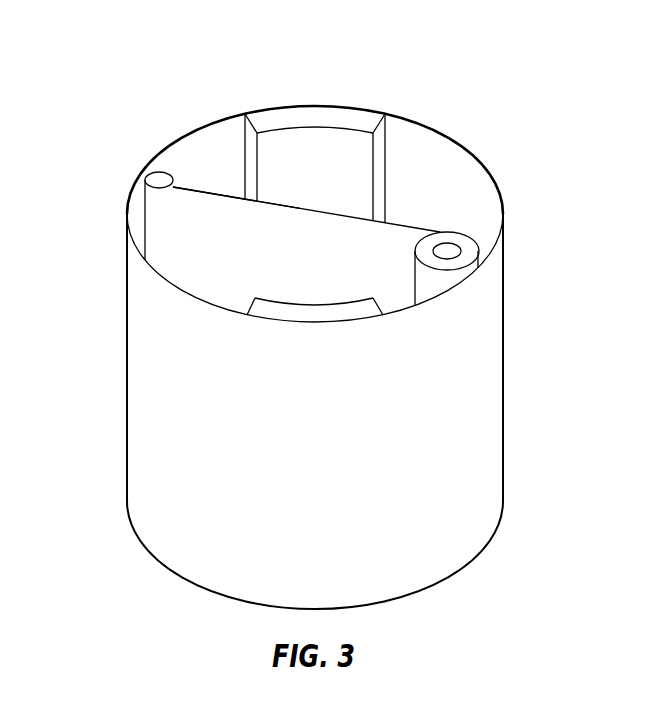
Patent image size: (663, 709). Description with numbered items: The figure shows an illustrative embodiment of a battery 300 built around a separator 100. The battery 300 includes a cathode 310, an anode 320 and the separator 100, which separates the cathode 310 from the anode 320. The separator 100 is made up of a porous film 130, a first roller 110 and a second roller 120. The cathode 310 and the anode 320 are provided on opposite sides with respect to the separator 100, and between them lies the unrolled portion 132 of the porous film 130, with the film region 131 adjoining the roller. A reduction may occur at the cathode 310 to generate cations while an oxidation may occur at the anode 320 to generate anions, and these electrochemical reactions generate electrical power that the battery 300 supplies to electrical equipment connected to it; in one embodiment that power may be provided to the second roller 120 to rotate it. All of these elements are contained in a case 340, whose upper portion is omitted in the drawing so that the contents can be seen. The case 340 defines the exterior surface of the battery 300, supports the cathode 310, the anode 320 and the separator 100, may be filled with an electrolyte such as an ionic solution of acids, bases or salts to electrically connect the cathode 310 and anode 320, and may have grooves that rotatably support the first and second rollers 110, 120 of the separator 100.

The battery 300 is at (122, 52).
The cathode 310 is at (325, 117).
The anode 320 is at (300, 315).
The case 340 is at (477, 355).
The separator 100 is at (470, 218).
The first roller 110 is at (445, 252).
The second roller 120 is at (155, 182).
The porous film 130 is at (313, 263).
The post wall 131 is at (465, 258).
The unrolled portion 132 is at (182, 225).